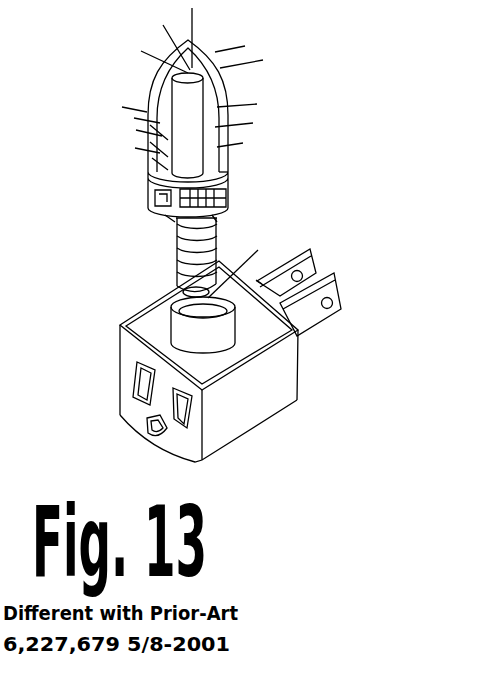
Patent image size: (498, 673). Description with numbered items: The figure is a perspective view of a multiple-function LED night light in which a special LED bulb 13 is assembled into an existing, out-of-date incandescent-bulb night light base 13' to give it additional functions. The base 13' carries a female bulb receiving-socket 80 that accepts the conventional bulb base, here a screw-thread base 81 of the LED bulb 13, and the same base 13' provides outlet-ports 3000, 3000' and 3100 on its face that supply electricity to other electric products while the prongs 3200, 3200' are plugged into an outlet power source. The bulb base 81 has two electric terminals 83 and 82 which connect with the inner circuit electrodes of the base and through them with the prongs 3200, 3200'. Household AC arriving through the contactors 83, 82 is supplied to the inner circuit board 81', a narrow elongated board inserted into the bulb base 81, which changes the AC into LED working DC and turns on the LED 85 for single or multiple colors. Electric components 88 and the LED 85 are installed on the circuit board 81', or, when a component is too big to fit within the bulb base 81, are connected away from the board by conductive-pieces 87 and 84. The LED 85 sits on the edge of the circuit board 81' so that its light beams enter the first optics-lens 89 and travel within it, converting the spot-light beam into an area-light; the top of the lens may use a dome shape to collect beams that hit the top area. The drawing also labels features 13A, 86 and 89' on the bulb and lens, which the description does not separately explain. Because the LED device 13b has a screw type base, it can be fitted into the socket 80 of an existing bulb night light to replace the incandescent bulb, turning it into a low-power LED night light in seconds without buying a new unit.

The LED bulb 13 is at (128, 152).
The LED device 13b is at (198, 53).
The window in housing 13A is at (155, 192).
The LED night-light base 13' is at (174, 361).
The first optics-lens 89 is at (253, 96).
The light rays 89' is at (119, 136).
The electric component 88 is at (152, 202).
The conductive-piece 87 is at (173, 218).
The collar rim 86 is at (229, 175).
The LED 85 is at (234, 186).
The conductive-piece 84 is at (232, 208).
The electric terminal 83 is at (217, 226).
The electric terminal 82 is at (256, 280).
The screw-thread base 81 is at (124, 256).
The circuit board 81' is at (219, 252).
The bulb receiving-socket 80 is at (172, 312).
The outlet-port 3000 is at (94, 409).
The outlet-port 3000' is at (221, 437).
The outlet-port 3100 is at (155, 433).
The prong 3200 is at (330, 271).
The prong 3200' is at (343, 304).